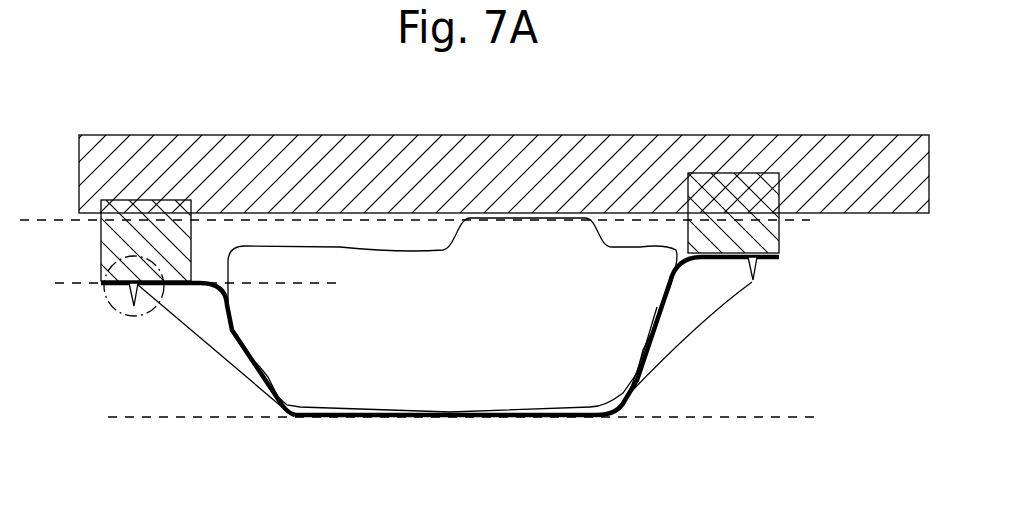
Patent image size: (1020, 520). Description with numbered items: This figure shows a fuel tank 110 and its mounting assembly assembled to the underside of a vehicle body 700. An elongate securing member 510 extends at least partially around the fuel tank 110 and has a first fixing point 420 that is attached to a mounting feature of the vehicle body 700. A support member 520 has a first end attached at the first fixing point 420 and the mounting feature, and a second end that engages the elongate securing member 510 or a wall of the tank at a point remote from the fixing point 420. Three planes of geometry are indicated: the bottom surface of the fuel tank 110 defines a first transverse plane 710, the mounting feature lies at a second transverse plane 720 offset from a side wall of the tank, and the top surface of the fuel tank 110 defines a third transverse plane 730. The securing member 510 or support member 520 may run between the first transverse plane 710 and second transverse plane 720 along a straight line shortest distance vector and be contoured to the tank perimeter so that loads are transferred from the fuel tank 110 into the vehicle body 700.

The vehicle body 700 is at (838, 170).
The third transverse plane 730 is at (47, 215).
The second transverse plane 720 is at (80, 284).
The first transverse plane 710 is at (750, 418).
The fuel tank 110 is at (433, 362).
The support member 520 is at (233, 338).
The elongate securing member 510 is at (542, 418).
The first fixing point 420 is at (123, 318).